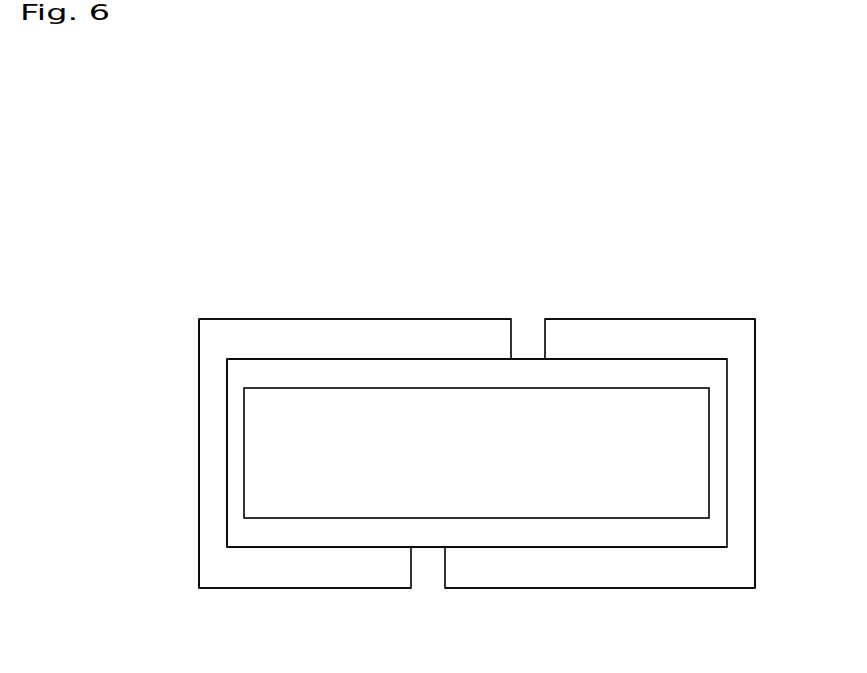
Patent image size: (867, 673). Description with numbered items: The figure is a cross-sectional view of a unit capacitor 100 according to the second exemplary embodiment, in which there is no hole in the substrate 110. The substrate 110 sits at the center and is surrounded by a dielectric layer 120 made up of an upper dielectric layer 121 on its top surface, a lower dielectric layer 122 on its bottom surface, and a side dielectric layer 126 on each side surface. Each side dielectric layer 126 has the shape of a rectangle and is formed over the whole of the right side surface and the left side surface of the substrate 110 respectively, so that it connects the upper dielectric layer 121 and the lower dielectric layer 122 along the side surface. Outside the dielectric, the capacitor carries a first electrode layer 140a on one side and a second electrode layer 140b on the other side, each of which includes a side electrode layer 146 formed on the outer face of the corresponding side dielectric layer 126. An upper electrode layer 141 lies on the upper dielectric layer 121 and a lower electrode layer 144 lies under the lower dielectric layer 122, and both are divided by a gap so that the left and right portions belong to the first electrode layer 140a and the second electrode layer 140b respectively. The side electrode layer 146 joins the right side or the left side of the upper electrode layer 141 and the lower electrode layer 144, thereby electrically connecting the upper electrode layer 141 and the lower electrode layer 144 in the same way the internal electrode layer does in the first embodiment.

The unit capacitor 100 is at (502, 114).
The substrate 110 is at (697, 472).
The dielectric layer 120 is at (220, 550).
The upper dielectric layer 121 is at (415, 375).
The lower dielectric layer 122 is at (280, 535).
The side dielectric layer 126 is at (235, 495).
The first electrode layer 140a is at (193, 310).
The second electrode layer 140b is at (723, 302).
The upper electrode layer 141 is at (320, 330).
The lower electrode layer 144 is at (342, 568).
The side electrode layer 146 is at (215, 403).